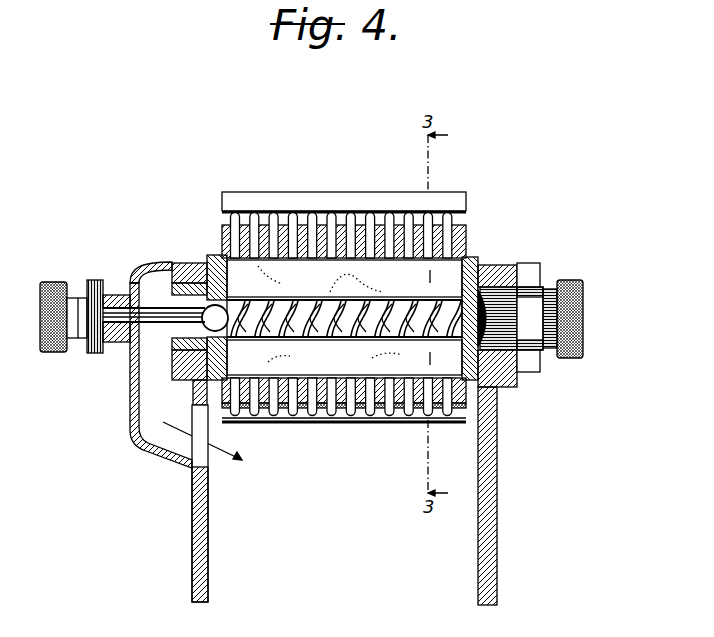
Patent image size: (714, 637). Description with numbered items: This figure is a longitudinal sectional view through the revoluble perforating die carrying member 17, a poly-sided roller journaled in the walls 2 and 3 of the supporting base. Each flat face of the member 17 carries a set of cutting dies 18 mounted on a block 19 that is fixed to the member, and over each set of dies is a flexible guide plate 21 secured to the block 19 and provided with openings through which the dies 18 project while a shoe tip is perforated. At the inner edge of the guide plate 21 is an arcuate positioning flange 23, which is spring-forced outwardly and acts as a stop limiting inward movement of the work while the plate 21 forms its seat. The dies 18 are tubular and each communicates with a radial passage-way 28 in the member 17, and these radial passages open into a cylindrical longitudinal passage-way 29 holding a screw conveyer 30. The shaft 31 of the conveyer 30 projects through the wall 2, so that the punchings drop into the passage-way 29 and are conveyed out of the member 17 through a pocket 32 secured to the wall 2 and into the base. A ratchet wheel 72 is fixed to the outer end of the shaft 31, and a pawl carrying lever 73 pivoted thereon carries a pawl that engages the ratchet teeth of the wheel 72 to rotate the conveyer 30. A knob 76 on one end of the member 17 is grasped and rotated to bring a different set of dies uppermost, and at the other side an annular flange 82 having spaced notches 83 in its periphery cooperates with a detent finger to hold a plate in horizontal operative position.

The wall 2 is at (209, 528).
The wall 3 is at (476, 530).
The perforating die carrying member 17 is at (479, 258).
The cutting dies 18 is at (380, 215).
The block 19 is at (218, 248).
The flexible guide plate 21 is at (306, 208).
The arcuate positioning flange 23 is at (353, 193).
The radial passage-way 28 is at (344, 318).
The longitudinal passage-way 29 is at (332, 334).
The screw conveyer 30 is at (280, 324).
The shaft 31 is at (148, 282).
The pocket 32 is at (130, 404).
The ratchet wheel 72 is at (95, 282).
The pawl carrying lever 73 is at (117, 294).
The knob 76 is at (580, 284).
The annular flange 82 is at (530, 378).
The notches 83 is at (532, 291).